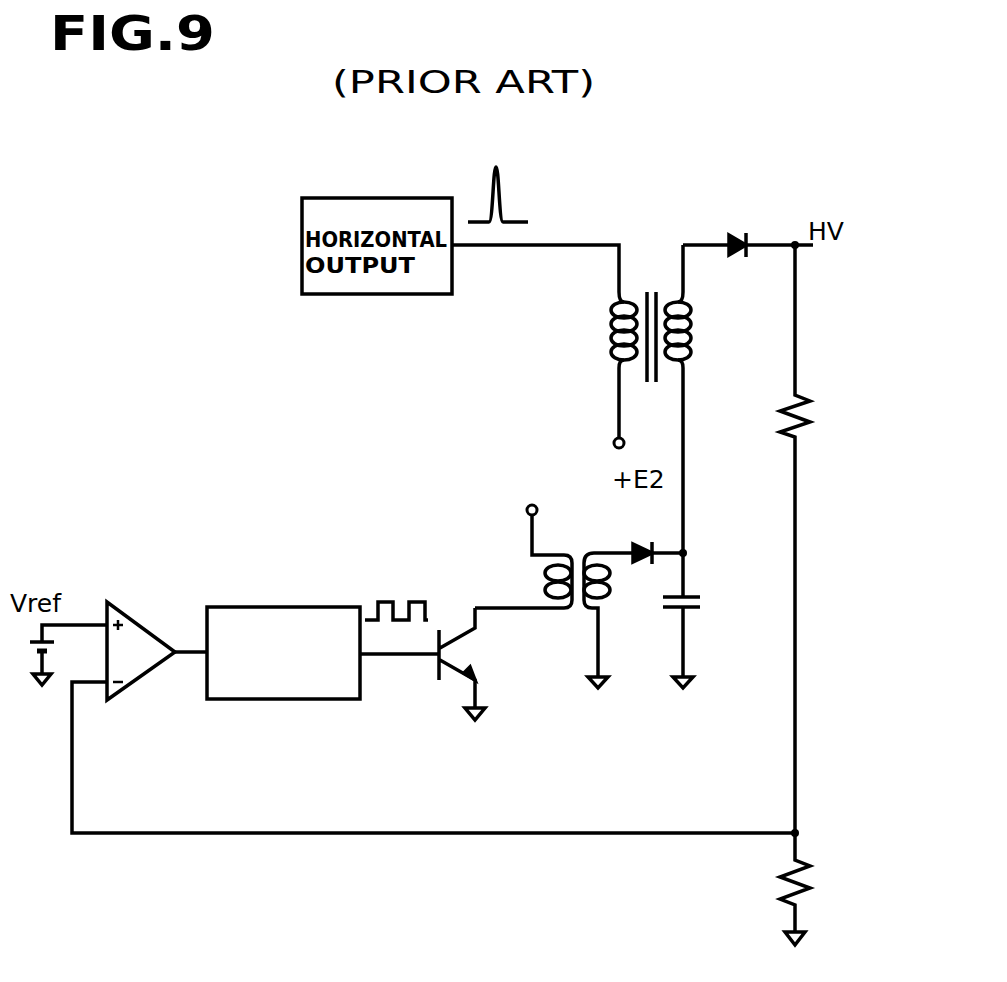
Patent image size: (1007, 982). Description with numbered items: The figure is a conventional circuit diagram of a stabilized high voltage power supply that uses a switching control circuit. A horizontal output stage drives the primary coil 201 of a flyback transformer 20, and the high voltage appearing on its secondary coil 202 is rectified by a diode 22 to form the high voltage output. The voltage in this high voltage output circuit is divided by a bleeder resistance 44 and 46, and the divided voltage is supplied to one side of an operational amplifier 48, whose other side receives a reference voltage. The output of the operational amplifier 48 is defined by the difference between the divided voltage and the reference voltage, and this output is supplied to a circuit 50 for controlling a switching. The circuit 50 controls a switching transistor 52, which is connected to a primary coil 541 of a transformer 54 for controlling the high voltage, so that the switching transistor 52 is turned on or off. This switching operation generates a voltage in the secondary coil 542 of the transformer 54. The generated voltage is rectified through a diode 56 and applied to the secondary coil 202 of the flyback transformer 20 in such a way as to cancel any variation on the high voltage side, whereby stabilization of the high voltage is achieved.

The flyback transformer 20 is at (642, 360).
The primary coil of flyback transformer 201 is at (607, 324).
The secondary coil of flyback transformer 202 is at (697, 327).
The high voltage rectifier diode 22 is at (741, 236).
The bleeder resistance 44 is at (822, 428).
The bleeder resistance 46 is at (818, 895).
The operational amplifier 48 is at (133, 612).
The circuit for controlling a switching 50 is at (270, 607).
The switching transistor 52 is at (465, 650).
The transformer for controlling high voltage 54 is at (551, 581).
The primary coil 541 is at (540, 580).
The secondary coil 542 is at (612, 590).
The diode 56 is at (662, 551).